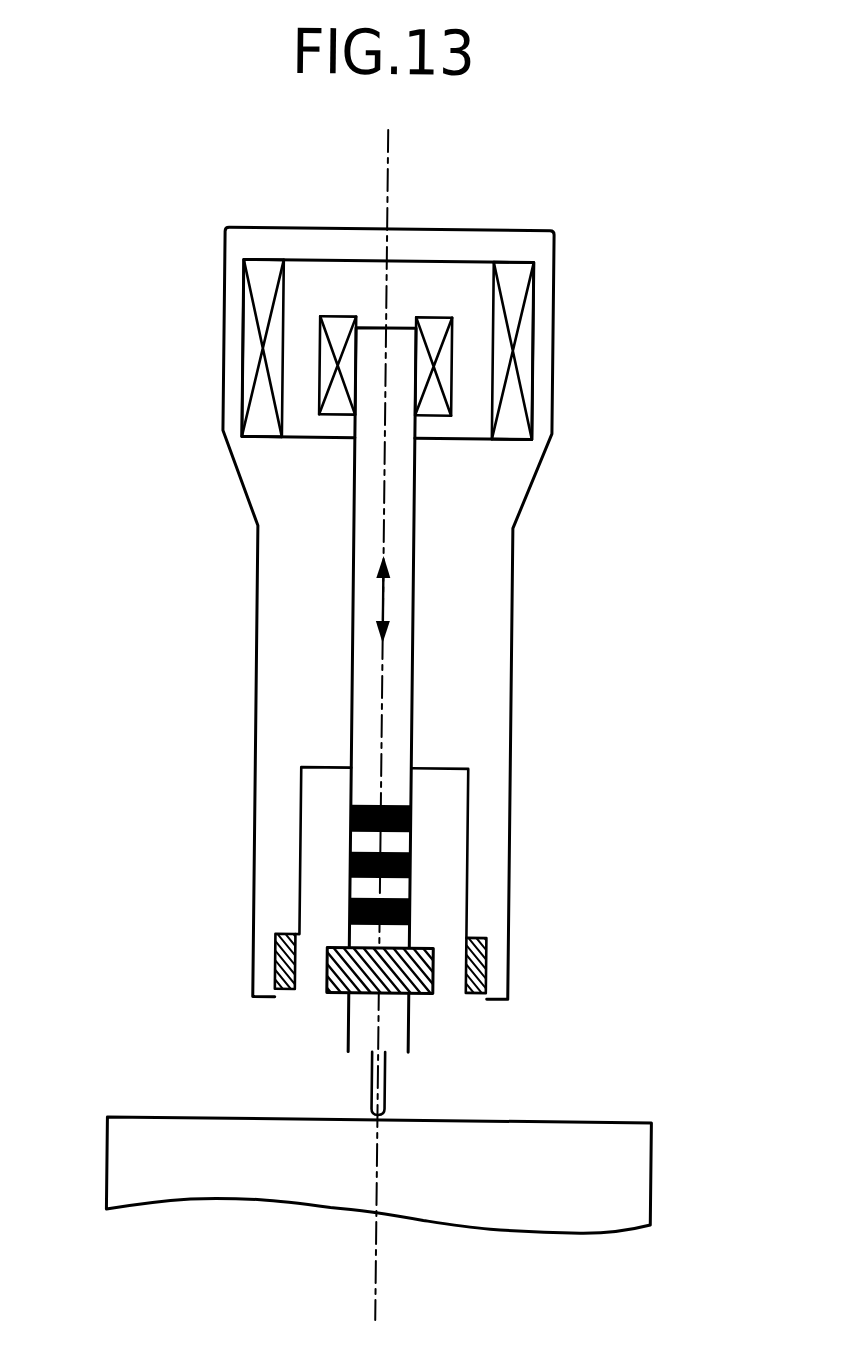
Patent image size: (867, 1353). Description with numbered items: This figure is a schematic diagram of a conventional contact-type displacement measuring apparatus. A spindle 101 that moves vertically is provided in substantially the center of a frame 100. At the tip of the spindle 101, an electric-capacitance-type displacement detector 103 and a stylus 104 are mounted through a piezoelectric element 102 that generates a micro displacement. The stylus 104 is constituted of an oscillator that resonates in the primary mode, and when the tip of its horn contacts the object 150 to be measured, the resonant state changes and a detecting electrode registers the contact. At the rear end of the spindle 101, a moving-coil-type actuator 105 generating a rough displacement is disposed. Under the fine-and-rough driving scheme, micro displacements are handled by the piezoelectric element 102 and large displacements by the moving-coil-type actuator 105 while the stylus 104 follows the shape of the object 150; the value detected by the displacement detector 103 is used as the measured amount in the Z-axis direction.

The frame 100 is at (220, 335).
The spindle 101 is at (368, 683).
The piezoelectric element 102 is at (414, 843).
The electric-capacitance-type displacement detector 103 is at (336, 944).
The stylus 104 is at (377, 1087).
The moving-coil-type actuator 105 is at (441, 362).
The object to be measured 150 is at (640, 1154).